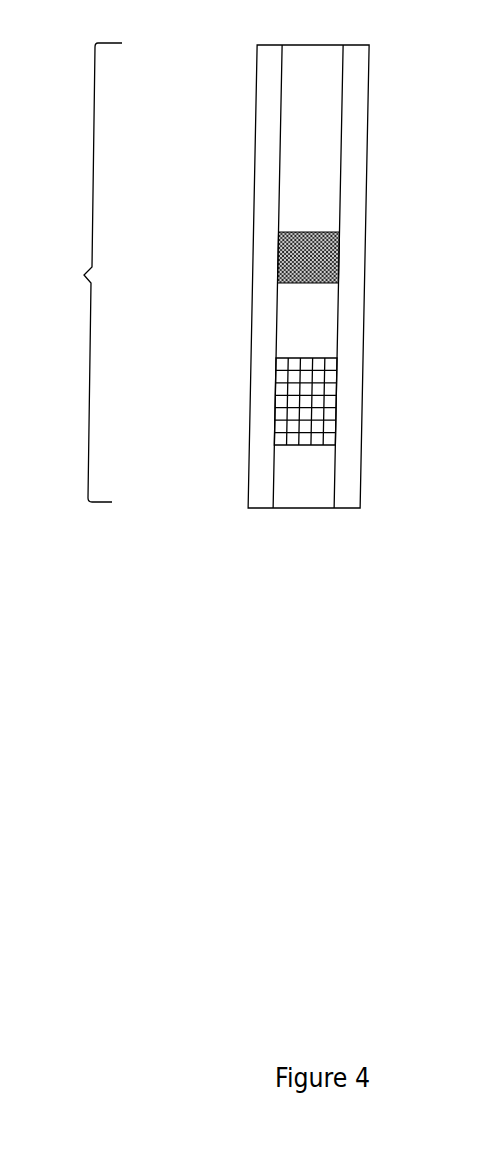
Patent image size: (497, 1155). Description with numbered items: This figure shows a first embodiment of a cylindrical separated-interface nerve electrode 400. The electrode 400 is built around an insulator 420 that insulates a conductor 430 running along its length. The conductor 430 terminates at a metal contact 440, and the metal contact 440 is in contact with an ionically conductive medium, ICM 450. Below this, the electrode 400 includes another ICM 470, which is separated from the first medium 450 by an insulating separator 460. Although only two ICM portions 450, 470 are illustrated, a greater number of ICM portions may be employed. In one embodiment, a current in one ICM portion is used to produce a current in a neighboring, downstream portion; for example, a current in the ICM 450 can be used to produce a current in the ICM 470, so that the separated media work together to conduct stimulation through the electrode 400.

The cylindrical electrode 400 is at (84, 275).
The insulator 420 is at (369, 91).
The conductor 430 is at (279, 145).
The metal contact 440 is at (277, 255).
The ICM 450 is at (276, 318).
The insulating separator 460 is at (274, 393).
The ICM 470 is at (273, 468).